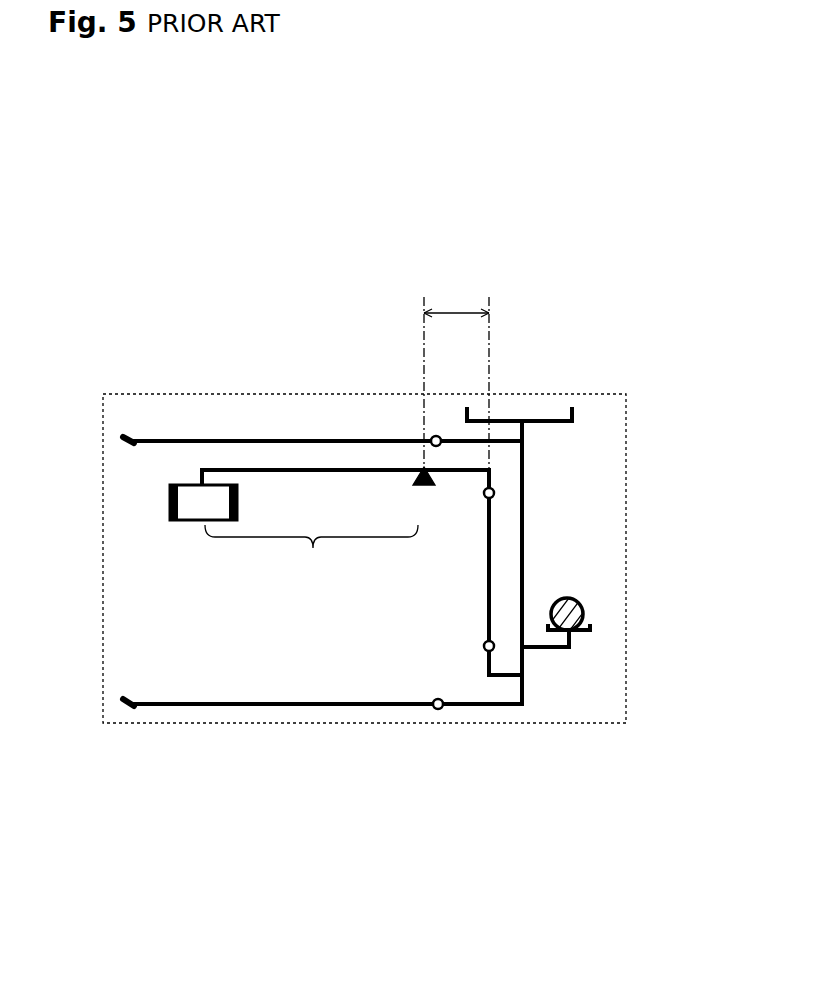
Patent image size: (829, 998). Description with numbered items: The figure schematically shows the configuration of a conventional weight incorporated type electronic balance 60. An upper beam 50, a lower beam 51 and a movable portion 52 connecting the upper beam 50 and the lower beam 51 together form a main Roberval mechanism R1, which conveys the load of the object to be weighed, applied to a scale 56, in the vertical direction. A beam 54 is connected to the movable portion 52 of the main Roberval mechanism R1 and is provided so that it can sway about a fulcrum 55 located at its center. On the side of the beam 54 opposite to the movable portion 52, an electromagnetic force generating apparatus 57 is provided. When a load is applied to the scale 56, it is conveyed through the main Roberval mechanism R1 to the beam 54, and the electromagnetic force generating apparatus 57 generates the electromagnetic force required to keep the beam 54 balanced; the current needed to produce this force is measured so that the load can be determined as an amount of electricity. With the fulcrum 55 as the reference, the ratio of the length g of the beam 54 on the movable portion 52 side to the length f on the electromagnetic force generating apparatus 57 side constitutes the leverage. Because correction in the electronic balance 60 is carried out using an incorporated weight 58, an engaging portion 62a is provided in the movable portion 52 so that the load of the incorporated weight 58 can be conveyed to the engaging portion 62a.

The electronic balance 60 is at (459, 218).
The upper beam 50 is at (237, 441).
The lower beam 51 is at (277, 705).
The movable portion 52 is at (529, 680).
The beam 54 is at (322, 470).
The fulcrum 55 is at (416, 466).
The scale 56 is at (535, 421).
The electromagnetic force generating apparatus 57 is at (203, 502).
The incorporated weight 58 is at (578, 598).
The engaging portion 62a is at (590, 633).
The main Roberval mechanism R1 is at (375, 723).
The length of the beam on the movable portion side g is at (456, 380).
The length of the beam on the electromagnetic force generating apparatus side f is at (311, 554).